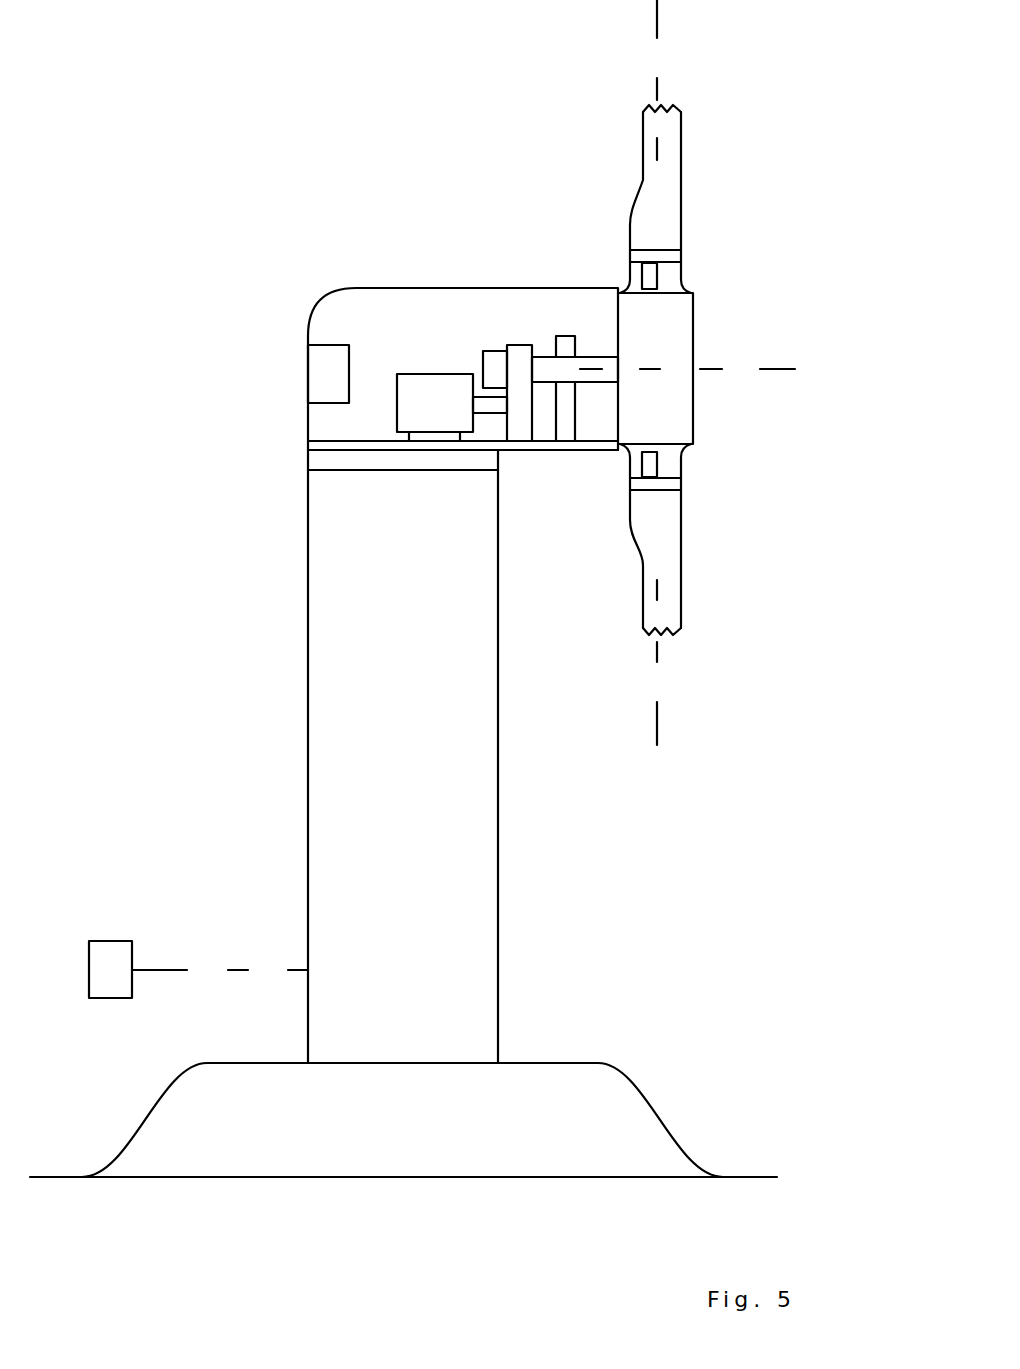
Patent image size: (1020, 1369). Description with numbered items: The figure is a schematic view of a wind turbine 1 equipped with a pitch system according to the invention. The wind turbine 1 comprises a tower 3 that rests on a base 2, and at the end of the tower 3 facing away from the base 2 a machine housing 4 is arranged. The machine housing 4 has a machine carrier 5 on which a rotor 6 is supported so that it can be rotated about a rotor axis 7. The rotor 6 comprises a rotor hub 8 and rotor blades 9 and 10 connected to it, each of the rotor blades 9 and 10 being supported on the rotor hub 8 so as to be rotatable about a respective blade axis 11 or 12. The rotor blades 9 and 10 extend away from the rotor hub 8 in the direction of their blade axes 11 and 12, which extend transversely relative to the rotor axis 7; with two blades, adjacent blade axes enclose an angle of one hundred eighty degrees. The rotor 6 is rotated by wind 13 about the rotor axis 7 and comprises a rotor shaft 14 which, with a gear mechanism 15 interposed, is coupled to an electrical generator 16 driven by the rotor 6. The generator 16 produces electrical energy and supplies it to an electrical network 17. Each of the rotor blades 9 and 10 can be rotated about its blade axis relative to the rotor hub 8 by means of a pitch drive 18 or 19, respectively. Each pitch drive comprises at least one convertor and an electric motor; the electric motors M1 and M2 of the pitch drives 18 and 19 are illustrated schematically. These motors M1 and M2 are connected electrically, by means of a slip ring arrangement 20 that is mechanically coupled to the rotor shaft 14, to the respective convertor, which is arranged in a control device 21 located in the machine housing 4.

The wind turbine 1 is at (216, 106).
The base 2 is at (148, 1123).
The tower 3 is at (309, 741).
The machine housing 4 is at (327, 298).
The machine carrier 5 is at (315, 446).
The rotor 6 is at (702, 314).
The rotor axis 7 is at (783, 369).
The rotor hub 8 is at (686, 428).
The rotor blade 9 is at (645, 135).
The rotor blade 10 is at (648, 609).
The blade axis 11 is at (657, 22).
The blade axis 12 is at (657, 718).
The wind 13 is at (814, 208).
The rotor shaft 14 is at (600, 388).
The gear mechanism 15 is at (523, 348).
The electrical generator 16 is at (409, 383).
The electrical network 17 is at (106, 946).
The pitch drive 18 is at (692, 255).
The pitch drive 19 is at (694, 481).
The slip ring arrangement 20 is at (497, 357).
The control device 21 is at (317, 370).
The electric motor M1 is at (647, 279).
The electric motor M2 is at (645, 466).